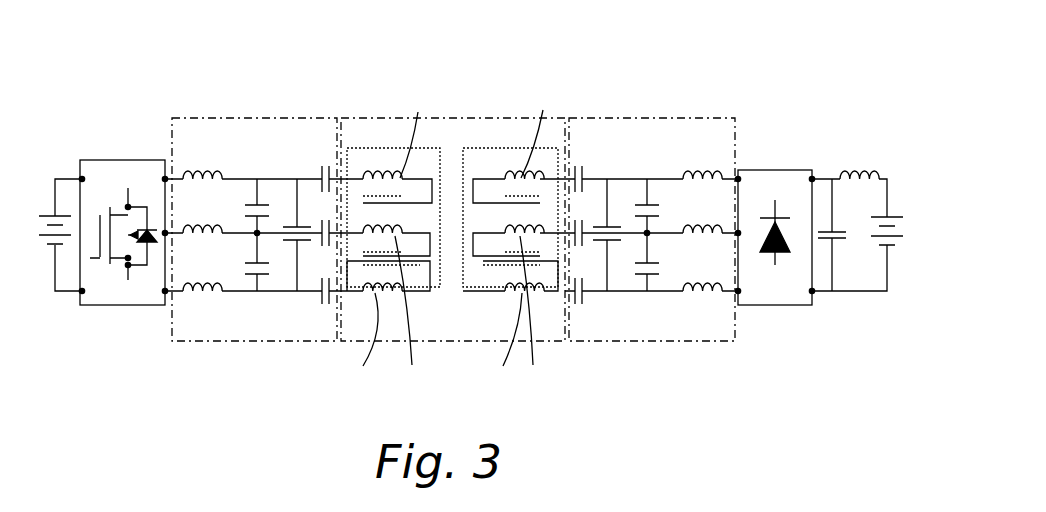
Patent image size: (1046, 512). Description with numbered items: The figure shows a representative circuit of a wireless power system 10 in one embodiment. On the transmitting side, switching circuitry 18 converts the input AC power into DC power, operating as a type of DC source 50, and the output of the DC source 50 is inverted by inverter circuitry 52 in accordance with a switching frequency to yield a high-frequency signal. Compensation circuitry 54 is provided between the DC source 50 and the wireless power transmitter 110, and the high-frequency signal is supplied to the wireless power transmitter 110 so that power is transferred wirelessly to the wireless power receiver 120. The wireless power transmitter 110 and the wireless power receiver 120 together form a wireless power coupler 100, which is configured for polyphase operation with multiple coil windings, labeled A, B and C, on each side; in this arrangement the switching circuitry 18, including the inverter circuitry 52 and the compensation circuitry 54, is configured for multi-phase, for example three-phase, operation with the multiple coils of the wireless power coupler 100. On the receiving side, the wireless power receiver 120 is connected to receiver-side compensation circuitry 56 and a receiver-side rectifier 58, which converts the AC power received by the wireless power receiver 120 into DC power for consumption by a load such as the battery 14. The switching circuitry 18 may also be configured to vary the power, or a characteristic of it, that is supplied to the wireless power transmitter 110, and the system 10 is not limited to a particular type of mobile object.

The wireless power system 10 is at (797, 112).
The battery 14 is at (897, 212).
The switching circuitry 18 is at (189, 98).
The DC source 50 is at (57, 243).
The inverter circuitry 52 is at (118, 306).
The compensation circuitry 54 is at (277, 341).
The receiver-side compensation circuitry 56 is at (663, 341).
The receiver-side rectifier 58 is at (793, 306).
The wireless power coupler 100 is at (478, 341).
The wireless power transmitter 110 is at (430, 140).
The wireless power receiver 120 is at (500, 138).